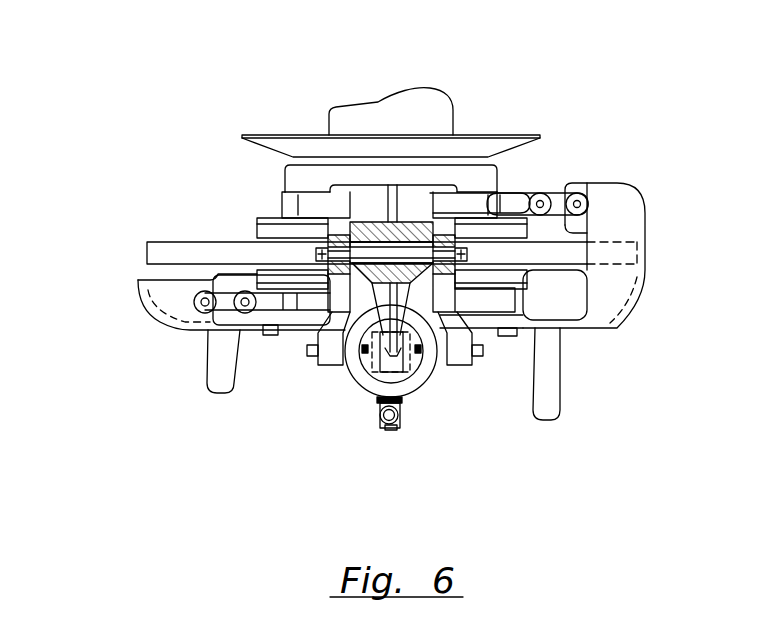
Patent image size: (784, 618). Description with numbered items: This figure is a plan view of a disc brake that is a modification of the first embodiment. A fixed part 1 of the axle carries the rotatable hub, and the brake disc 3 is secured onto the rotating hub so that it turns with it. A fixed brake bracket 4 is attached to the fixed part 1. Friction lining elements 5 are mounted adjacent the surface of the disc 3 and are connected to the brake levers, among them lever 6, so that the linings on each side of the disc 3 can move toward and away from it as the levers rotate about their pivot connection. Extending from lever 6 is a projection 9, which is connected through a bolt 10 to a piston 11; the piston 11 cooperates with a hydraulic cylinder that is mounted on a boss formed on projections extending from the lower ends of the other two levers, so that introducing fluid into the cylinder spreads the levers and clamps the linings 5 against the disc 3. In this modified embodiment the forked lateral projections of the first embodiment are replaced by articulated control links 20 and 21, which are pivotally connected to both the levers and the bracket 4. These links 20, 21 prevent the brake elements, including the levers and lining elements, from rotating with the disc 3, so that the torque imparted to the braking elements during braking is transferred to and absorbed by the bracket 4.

The fixed part of the axis 1 is at (552, 340).
The brake disc 3 is at (205, 253).
The fixed brake bracket 4 is at (178, 297).
The friction lining elements 5 is at (318, 235).
The brake lever 6 is at (412, 208).
The projection 9 is at (330, 352).
The bolt 10 is at (416, 352).
The piston 11 is at (366, 360).
The articulated control link 20 is at (228, 330).
The articulated control link 21 is at (558, 197).